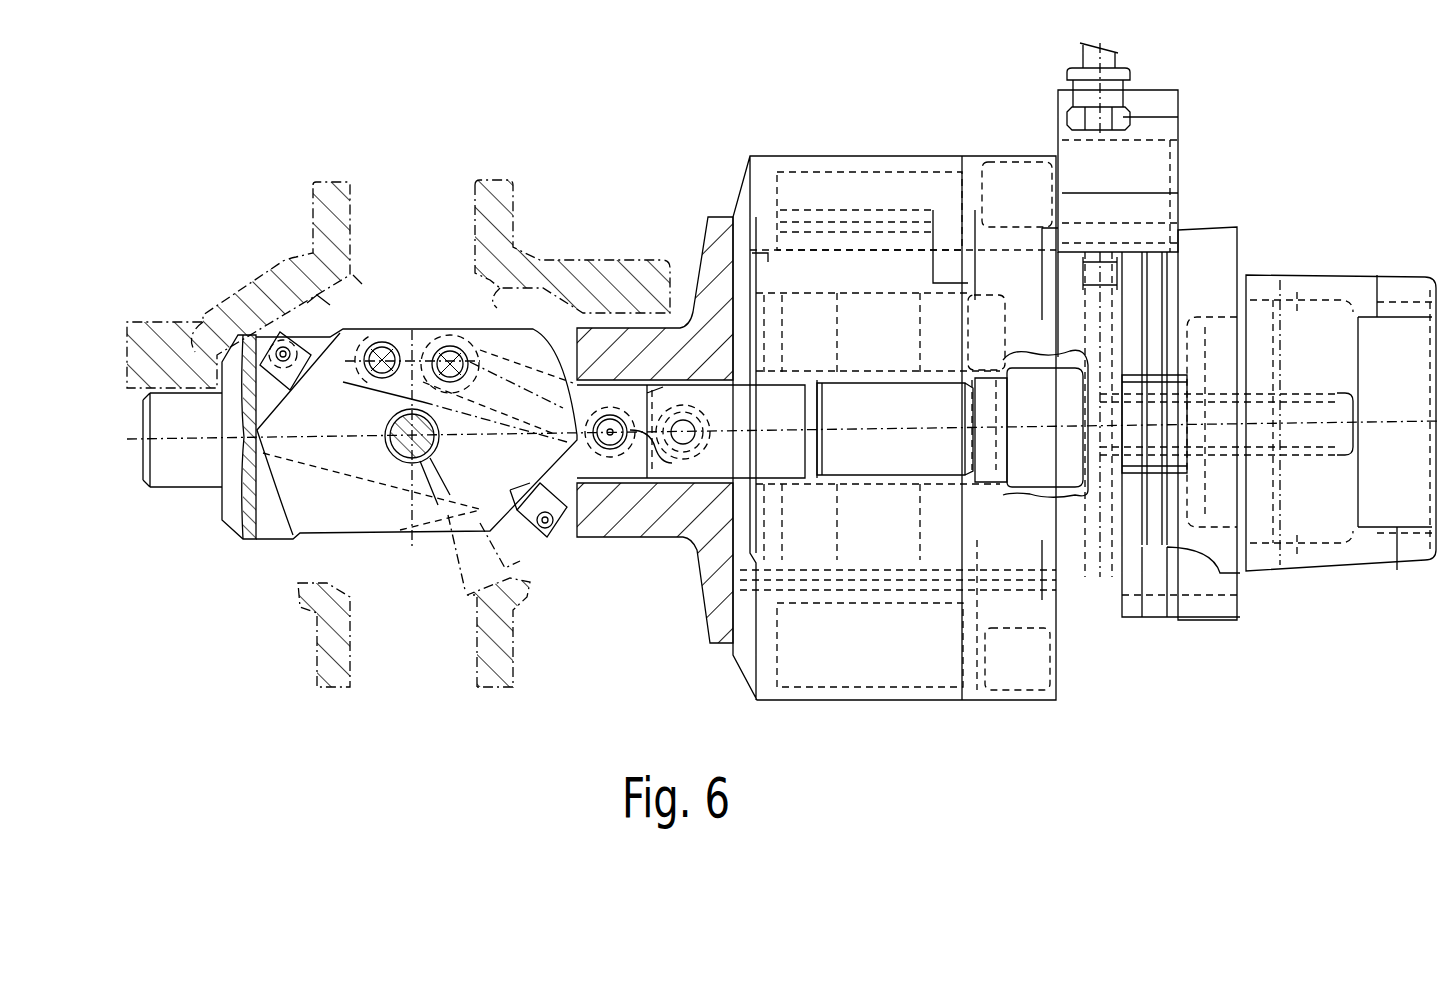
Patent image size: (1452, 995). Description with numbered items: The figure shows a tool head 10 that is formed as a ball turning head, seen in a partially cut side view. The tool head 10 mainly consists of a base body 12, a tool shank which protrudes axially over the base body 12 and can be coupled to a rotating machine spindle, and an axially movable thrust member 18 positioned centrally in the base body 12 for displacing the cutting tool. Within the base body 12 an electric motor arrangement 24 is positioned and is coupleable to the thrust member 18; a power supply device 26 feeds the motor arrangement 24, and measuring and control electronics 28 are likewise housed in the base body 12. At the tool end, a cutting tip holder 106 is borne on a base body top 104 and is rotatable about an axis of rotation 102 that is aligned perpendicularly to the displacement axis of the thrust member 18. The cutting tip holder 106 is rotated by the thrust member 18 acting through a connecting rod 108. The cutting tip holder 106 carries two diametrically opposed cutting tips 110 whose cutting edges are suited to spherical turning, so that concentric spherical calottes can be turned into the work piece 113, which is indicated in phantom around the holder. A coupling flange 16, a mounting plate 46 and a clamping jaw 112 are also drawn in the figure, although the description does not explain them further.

The tool head 10 is at (917, 700).
The base body 12 is at (933, 570).
The coupling flange 16 is at (1345, 570).
The thrust member 18 is at (873, 410).
The electric motor arrangement 24 is at (820, 553).
The power supply device 26 is at (1040, 182).
The measuring and control electronics 28 is at (816, 150).
The mounting plate 46 is at (1303, 387).
The axis of rotation 102 is at (403, 462).
The base body top 104 is at (642, 507).
The cutting tip holder 106 is at (300, 502).
The connecting rod 108 is at (477, 337).
The cutting tips 110 is at (278, 328).
The upper clamping jaw 112 is at (547, 283).
The work piece 113 is at (327, 583).